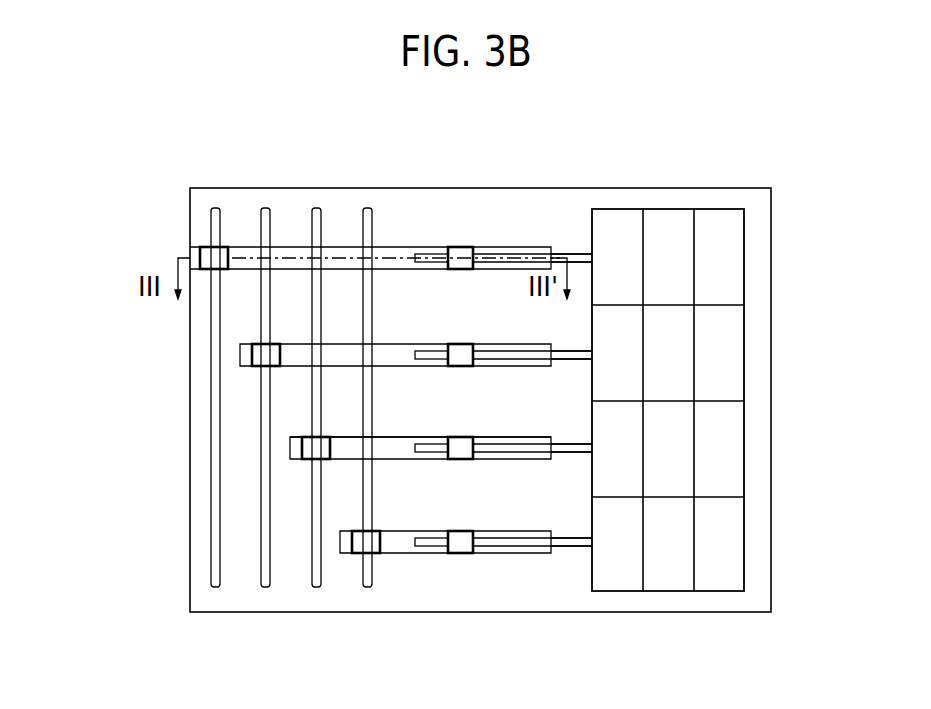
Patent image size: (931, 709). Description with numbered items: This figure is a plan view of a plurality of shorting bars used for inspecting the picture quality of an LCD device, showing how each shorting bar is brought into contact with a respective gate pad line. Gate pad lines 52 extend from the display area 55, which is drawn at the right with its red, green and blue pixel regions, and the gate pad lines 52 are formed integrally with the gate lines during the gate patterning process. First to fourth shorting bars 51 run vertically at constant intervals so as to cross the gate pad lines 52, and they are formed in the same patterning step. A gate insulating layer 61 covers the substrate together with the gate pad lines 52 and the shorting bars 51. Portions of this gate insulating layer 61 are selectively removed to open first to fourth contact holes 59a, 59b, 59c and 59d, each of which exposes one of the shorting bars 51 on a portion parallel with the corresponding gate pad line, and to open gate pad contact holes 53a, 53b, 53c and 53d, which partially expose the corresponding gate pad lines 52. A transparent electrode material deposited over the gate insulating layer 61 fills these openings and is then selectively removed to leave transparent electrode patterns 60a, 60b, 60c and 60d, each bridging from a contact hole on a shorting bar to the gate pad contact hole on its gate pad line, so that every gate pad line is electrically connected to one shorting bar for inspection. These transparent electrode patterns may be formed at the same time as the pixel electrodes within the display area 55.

The first to fourth shorting bars 51 is at (216, 587).
The gate pad lines 52 is at (537, 542).
The gate pad contact hole 53a is at (464, 253).
The gate pad contact hole 53b is at (464, 350).
The gate pad contact hole 53c is at (464, 443).
The gate pad contact hole 53d is at (464, 537).
The display area 55 is at (618, 208).
The first contact hole 59a is at (213, 257).
The second contact hole 59b is at (265, 356).
The third contact hole 59c is at (315, 447).
The fourth contact hole 59d is at (366, 545).
The transparent electrode pattern 60a is at (392, 253).
The transparent electrode pattern 60b is at (392, 350).
The transparent electrode pattern 60c is at (392, 443).
The transparent electrode pattern 60d is at (392, 537).
The gate insulating layer 61 is at (741, 602).